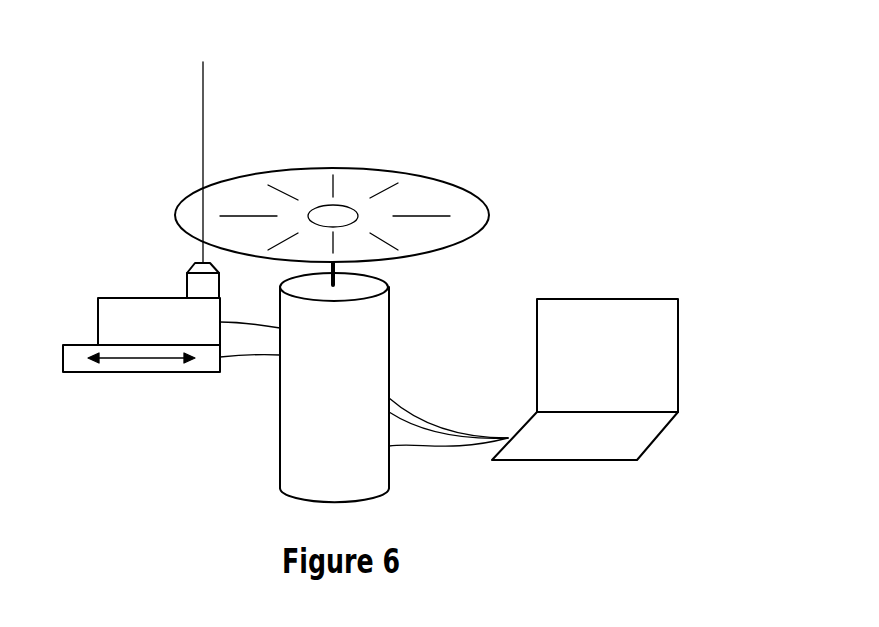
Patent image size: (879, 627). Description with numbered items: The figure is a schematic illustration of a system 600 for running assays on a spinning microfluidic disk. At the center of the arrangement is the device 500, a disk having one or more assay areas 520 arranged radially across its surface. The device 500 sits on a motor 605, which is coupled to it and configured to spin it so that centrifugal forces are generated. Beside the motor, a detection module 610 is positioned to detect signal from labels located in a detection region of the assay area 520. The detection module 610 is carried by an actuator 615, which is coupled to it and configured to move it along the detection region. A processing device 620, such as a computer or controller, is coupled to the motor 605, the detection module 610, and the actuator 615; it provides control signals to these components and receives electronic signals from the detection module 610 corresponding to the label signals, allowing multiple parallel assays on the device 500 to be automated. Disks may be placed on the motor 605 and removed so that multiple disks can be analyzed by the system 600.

The system 600 is at (742, 110).
The device 500 is at (349, 196).
The assay area 520 is at (447, 215).
The motor 605 is at (389, 337).
The detection module 610 is at (152, 298).
The actuator 615 is at (148, 372).
The processing device 620 is at (637, 299).